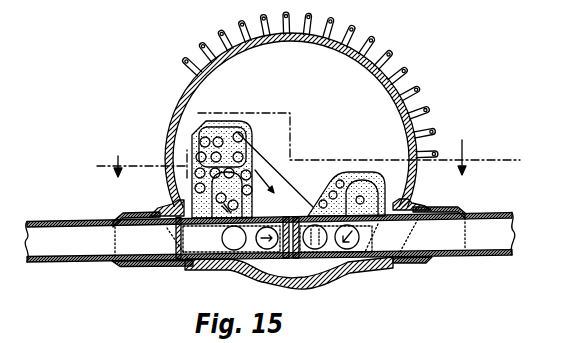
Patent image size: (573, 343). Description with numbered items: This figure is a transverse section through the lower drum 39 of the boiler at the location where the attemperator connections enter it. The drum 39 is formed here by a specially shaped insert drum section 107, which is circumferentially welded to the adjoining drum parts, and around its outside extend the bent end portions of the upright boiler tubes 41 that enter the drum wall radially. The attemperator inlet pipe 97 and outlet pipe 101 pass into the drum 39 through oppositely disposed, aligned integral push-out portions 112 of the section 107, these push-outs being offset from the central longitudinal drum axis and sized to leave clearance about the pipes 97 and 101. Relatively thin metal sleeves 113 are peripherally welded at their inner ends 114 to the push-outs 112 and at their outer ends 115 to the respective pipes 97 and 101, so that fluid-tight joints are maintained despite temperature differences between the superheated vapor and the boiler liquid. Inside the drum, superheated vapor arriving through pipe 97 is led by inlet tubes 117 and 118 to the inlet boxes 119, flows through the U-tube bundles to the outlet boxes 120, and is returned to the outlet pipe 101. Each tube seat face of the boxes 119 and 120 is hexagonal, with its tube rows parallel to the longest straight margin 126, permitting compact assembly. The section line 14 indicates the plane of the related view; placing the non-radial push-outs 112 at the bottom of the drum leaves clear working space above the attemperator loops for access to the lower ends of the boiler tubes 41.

The section line 14- 14 is at (308, 157).
The lower drum 39 is at (330, 282).
The boiler tubes 41 is at (180, 52).
The attemperator inlet pipe 97 is at (71, 221).
The attemperator outlet pipe 101 is at (491, 257).
The drum section 107 is at (181, 98).
The push-out portions 112 is at (205, 272).
The sleeves 113 is at (135, 267).
The layer 114 is at (188, 270).
The outer ends of sleeves 115 is at (114, 262).
The inlet tube 117 is at (172, 201).
The inlet tube 118 is at (229, 211).
The inlet boxes 119 is at (192, 172).
The outlet boxes 120 is at (236, 134).
The longest straight margin 126 is at (190, 145).